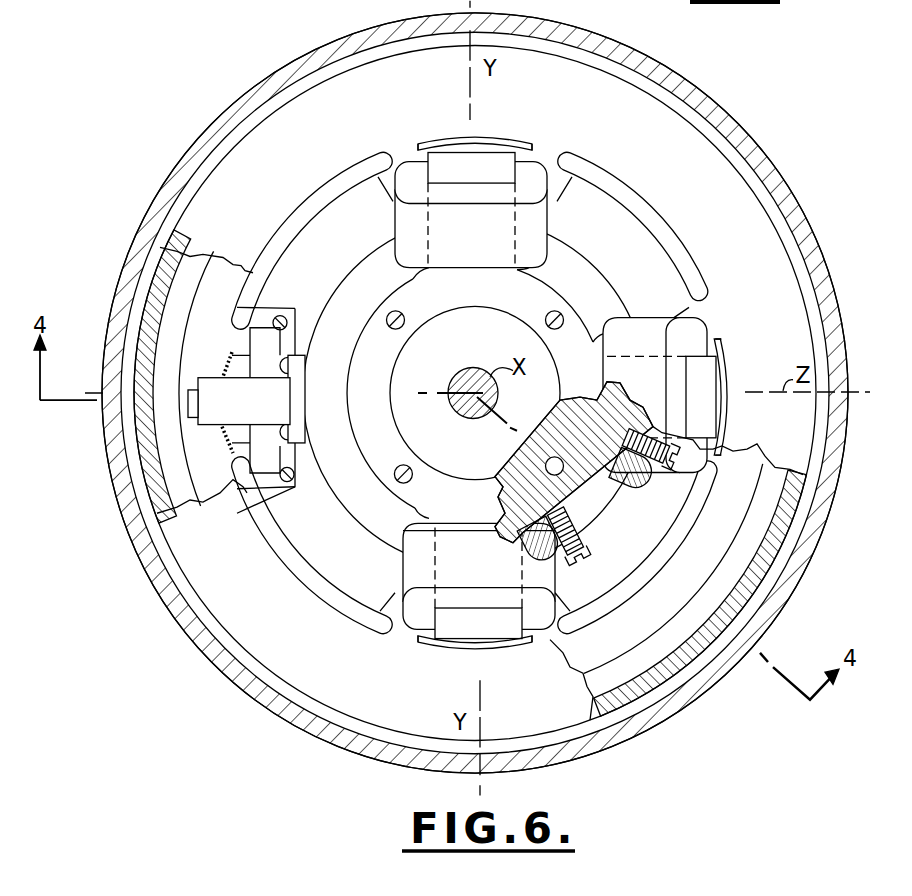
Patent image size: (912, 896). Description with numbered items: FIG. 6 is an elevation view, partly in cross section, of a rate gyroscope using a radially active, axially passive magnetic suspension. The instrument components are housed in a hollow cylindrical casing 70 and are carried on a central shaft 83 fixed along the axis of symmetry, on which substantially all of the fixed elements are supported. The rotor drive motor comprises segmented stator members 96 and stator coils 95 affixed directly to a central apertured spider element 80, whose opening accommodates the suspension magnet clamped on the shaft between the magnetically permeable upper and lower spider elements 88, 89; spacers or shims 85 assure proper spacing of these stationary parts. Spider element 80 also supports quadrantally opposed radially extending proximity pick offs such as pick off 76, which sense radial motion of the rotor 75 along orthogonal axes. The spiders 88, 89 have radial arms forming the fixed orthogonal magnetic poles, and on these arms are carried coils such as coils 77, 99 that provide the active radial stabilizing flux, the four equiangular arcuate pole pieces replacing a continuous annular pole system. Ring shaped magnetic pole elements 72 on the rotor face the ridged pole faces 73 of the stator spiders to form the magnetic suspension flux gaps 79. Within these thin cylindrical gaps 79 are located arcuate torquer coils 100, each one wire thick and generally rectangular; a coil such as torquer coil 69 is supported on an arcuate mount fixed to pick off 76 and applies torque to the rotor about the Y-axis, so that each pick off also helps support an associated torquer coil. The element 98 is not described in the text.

The torquer coil 69 is at (204, 429).
The hollow cylindrical casing 70 is at (475, 393).
The ring shaped magnetic pole element 72 is at (475, 393).
The ridged pole face 73 is at (489, 184).
The laminated rotor drive motor element 75 is at (524, 462).
The proximity pick off 76 is at (248, 410).
The coil 77 is at (498, 215).
The magnetic suspension magnetic flux gap 79 is at (592, 393).
The central apertured spider element 80 is at (472, 392).
The central shaft 83 is at (459, 389).
The spacers or shims 85 is at (475, 393).
The upper spider element 88 is at (480, 370).
The lower spider element 89 is at (687, 379).
The stator coil 95 is at (480, 483).
The segmented stator member 96 is at (484, 473).
The field coil 98 is at (479, 604).
The coil 99 is at (479, 507).
The arcuate torquer coil 100 is at (573, 408).